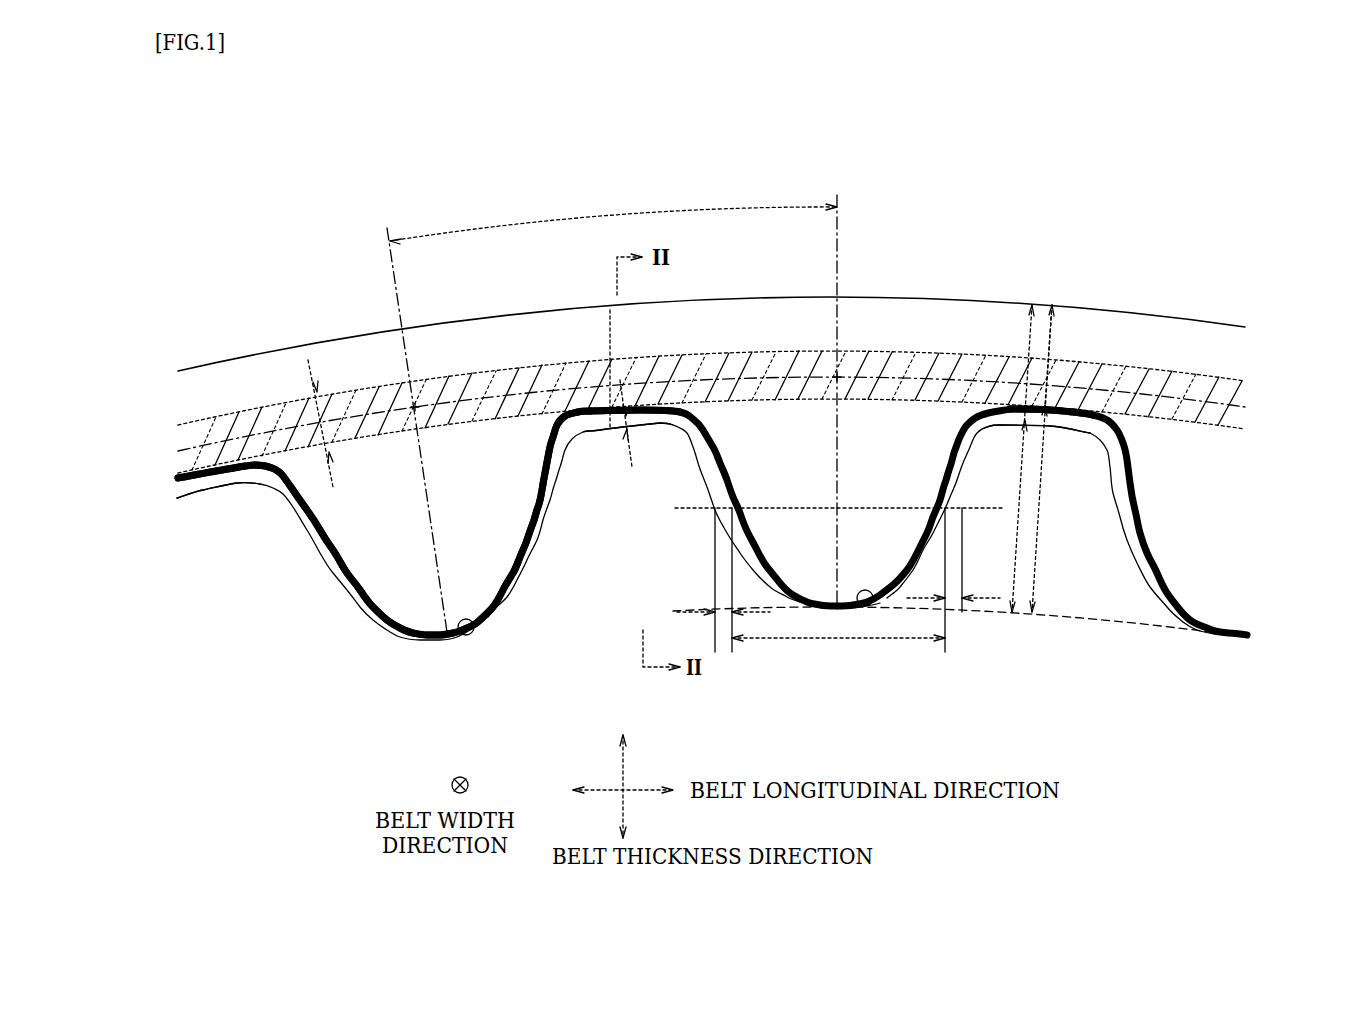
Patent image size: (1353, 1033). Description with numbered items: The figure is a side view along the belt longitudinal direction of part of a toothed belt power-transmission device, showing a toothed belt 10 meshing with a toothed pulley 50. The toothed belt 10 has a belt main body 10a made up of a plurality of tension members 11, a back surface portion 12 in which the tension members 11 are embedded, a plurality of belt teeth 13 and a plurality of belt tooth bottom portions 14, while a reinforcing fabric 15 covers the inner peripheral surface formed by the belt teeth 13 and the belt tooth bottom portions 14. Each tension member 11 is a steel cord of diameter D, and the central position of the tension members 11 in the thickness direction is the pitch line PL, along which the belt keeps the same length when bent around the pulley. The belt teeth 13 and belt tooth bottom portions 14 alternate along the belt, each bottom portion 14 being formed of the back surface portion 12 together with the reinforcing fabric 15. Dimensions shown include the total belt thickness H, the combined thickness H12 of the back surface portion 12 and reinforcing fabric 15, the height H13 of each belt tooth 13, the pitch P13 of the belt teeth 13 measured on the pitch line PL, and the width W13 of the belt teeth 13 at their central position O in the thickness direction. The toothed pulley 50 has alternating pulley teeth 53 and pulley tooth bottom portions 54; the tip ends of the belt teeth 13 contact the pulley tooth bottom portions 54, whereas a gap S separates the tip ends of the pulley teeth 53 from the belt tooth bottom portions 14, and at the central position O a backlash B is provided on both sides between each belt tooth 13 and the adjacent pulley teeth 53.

The toothed belt 10 is at (1085, 323).
The belt main body 10a is at (476, 560).
The tension member 11 is at (570, 382).
The back surface portion 12 is at (606, 355).
The belt tooth 13 is at (502, 559).
The belt tooth bottom portion 14 is at (567, 458).
The reinforcing fabric 15 is at (537, 507).
The toothed pulley 50 is at (1102, 521).
The pulley tooth 53 is at (647, 558).
The pulley tooth bottom portion 54 is at (474, 630).
The pitch of the belt teeth P13 is at (612, 406).
The width of the belt teeth W13 is at (838, 656).
The total belt thickness H is at (960, 471).
The total thickness of the back surface portion and reinforcing fabric H12 is at (1073, 360).
The height of the belt teeth H13 is at (1064, 458).
The backlash B is at (838, 580).
The diameter of the tension member D is at (316, 423).
The gap S is at (637, 423).
The central position of the belt teeth O is at (828, 509).
The pitch line PL is at (1154, 392).